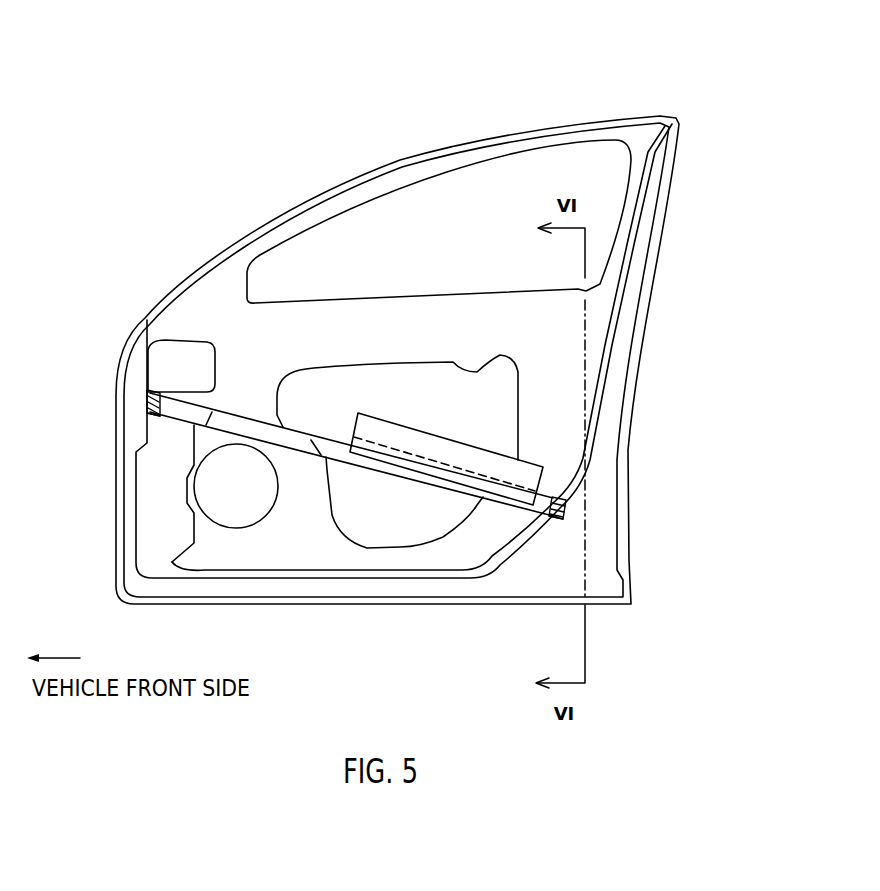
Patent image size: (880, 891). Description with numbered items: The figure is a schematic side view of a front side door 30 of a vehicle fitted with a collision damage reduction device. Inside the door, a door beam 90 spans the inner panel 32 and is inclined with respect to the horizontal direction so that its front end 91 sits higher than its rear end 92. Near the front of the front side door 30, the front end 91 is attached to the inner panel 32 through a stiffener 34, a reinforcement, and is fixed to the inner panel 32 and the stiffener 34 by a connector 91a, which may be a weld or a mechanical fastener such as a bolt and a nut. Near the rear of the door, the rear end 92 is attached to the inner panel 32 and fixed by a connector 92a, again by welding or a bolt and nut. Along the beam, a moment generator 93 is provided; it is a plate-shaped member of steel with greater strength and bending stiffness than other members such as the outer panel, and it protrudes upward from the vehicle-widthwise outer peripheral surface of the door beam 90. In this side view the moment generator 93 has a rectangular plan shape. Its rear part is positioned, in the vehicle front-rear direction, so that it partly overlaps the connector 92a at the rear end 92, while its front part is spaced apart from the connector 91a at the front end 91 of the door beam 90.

The front side door 30 is at (213, 187).
The inner panel 32 is at (365, 328).
The stiffener 34 is at (150, 349).
The door beam 90 is at (368, 472).
The front end 91 is at (151, 394).
The connector 91a is at (146, 418).
The rear end 92 is at (559, 500).
The connector 92a is at (563, 508).
The moment generator 93 is at (522, 457).